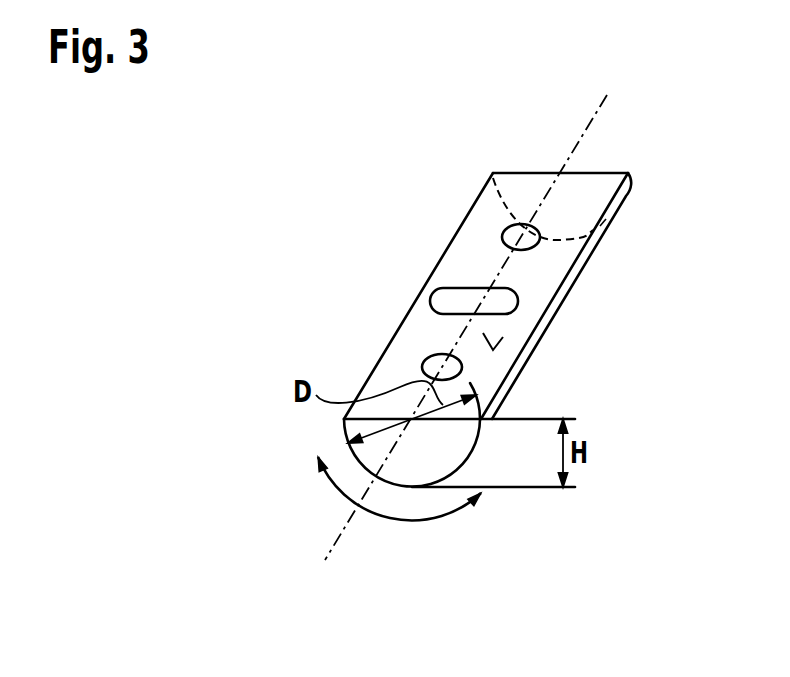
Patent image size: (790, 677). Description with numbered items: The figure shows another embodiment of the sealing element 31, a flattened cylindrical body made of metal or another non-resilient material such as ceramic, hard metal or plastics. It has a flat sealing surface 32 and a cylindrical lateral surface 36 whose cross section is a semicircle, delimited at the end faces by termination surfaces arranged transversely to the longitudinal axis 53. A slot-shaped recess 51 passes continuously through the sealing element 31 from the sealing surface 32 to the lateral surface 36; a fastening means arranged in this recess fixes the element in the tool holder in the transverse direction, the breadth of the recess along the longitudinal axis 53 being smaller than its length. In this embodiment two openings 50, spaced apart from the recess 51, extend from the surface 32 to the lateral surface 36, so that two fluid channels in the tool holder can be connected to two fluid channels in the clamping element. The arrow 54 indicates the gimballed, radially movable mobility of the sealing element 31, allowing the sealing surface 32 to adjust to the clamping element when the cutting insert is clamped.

The sealing element 31 is at (333, 283).
The sealing surface 32 is at (503, 337).
The cylindrical lateral surface 36 is at (507, 380).
The opening 50 is at (513, 236).
The recess 51 is at (503, 303).
The longitudinal axis 53 is at (603, 102).
The arrow 54 is at (413, 520).